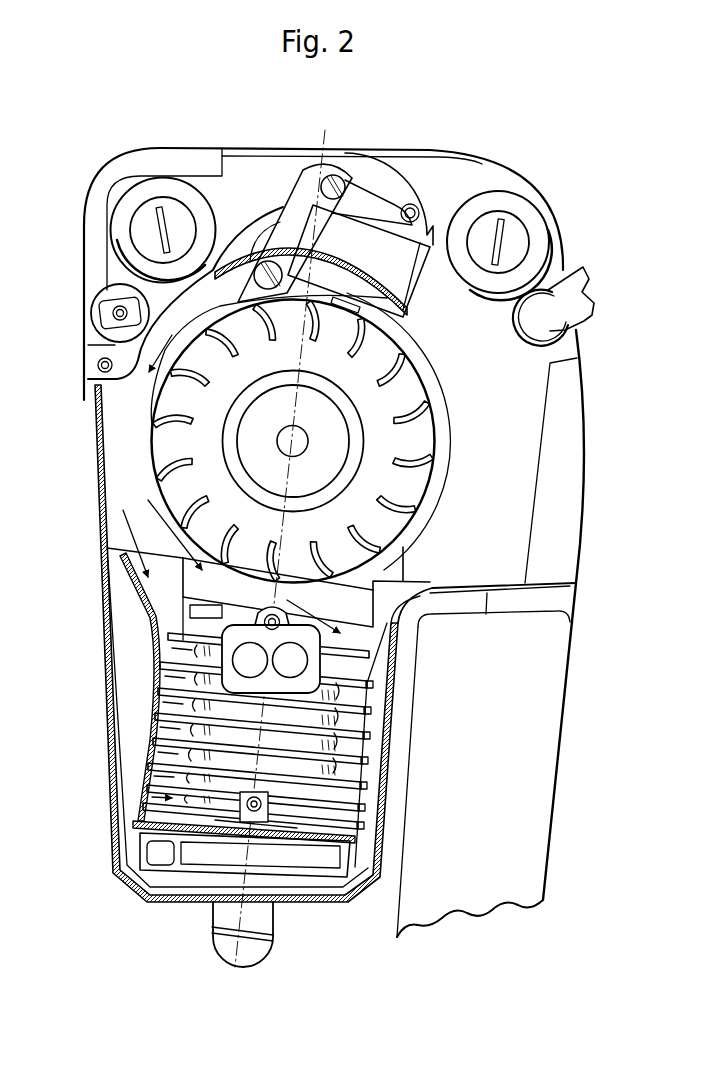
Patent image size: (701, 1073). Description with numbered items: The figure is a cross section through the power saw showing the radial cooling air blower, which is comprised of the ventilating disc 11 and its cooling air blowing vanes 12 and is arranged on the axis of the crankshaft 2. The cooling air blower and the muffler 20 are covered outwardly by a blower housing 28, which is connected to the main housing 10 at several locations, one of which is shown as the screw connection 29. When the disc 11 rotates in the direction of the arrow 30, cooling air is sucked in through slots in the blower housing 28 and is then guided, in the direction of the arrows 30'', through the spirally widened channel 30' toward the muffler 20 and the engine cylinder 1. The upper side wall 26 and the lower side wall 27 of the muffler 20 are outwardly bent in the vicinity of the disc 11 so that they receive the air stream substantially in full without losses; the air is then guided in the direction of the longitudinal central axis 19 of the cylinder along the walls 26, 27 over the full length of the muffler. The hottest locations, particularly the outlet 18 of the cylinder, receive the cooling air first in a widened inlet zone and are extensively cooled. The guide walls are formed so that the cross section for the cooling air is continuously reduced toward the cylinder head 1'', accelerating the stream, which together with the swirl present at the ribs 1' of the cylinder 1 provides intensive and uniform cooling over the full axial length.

The engine cylinder 1 is at (257, 745).
The ribs 1' is at (293, 772).
The cylinder head 1'' is at (289, 829).
The crankshaft 2 is at (277, 442).
The housing 10 is at (250, 167).
The ventilating wheel or disc 11 is at (403, 378).
The cooling air blowing vanes 12 is at (420, 413).
The outlet 18 is at (300, 669).
The longitudinal central axis 19 is at (340, 725).
The muffler 20 is at (147, 669).
The upper side wall 26 is at (360, 799).
The lower side wall 27 is at (123, 602).
The blower housing 28 is at (106, 636).
The screw connection 29 is at (98, 365).
The arrow 30 is at (167, 340).
The spirally widened channel 30' is at (221, 316).
The arrow 30'' is at (206, 630).